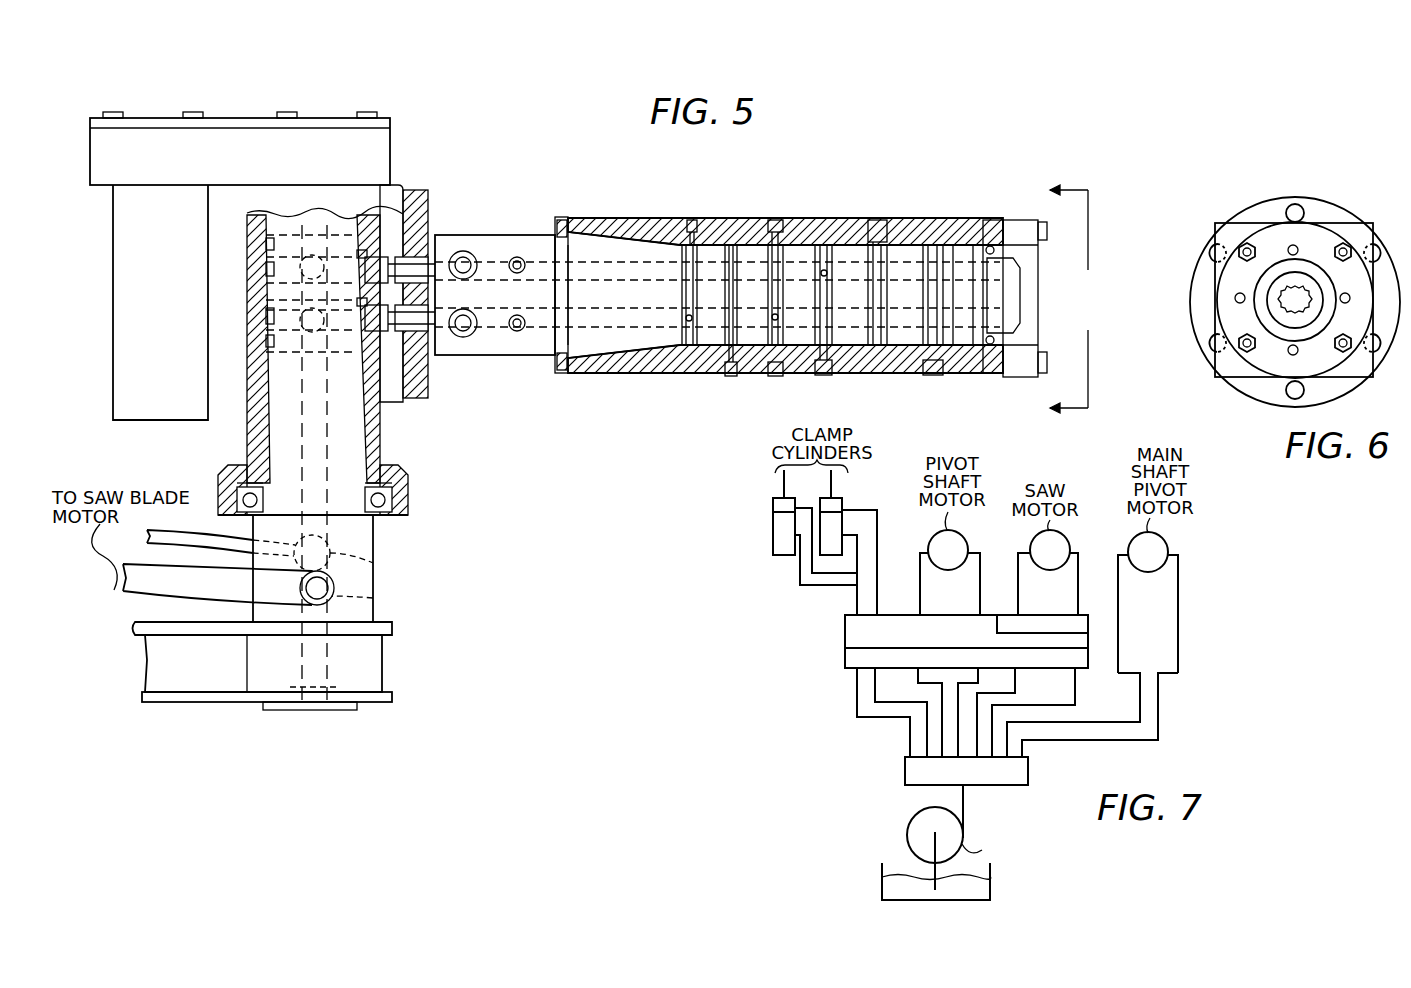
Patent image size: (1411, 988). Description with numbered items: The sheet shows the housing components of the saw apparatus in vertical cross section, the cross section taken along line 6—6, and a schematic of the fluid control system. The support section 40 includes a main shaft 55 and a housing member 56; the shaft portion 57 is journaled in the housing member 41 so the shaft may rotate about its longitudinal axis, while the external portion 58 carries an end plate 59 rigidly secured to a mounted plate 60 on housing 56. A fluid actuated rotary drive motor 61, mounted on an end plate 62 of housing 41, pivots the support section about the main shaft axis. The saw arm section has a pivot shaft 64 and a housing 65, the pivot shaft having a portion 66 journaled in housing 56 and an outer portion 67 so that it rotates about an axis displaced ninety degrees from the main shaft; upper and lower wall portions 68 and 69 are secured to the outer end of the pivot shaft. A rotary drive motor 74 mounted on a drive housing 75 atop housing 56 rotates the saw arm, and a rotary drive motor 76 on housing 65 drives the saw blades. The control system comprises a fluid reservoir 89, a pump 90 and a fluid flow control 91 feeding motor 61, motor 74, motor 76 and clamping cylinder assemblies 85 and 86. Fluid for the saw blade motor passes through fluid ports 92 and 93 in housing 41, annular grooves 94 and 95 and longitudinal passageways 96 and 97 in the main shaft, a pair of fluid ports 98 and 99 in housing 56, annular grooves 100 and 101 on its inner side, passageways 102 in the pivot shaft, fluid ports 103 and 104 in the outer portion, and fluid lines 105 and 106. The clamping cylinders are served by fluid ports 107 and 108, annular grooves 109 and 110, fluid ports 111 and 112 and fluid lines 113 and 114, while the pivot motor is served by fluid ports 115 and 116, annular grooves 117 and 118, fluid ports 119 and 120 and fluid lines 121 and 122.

In FIG. 5, the support section 40 is at (402, 134).
In FIG. 5, the housing member 41 is at (843, 220).
In FIG. 7, the housing member 41 is at (845, 666).
In FIG. 5, the main shaft 55 is at (527, 230).
In FIG. 7, the main shaft 55 is at (845, 648).
In FIG. 5, the housing member 56 is at (388, 447).
In FIG. 5, the shaft portion 57 is at (656, 360).
In FIG. 5, the external portion 58 is at (513, 356).
In FIG. 5, the end plate 59 is at (426, 208).
In FIG. 6, the end plate 59 is at (1203, 297).
In FIG. 5, the mounted plate 60 is at (393, 194).
In FIG. 7, the rotary drive motor 61 is at (1168, 554).
In FIG. 5, the end plate 62 is at (1018, 374).
In FIG. 6, the end plate 62 is at (1228, 365).
In FIG. 5, the pivot shaft 64 is at (378, 541).
In FIG. 7, the pivot shaft 64 is at (1083, 628).
In FIG. 5, the housing 65 is at (384, 668).
In FIG. 5, the shaft portion 66 is at (352, 428).
In FIG. 5, the outer portion 67 is at (338, 590).
In FIG. 5, the upper wall portion 68 is at (392, 634).
In FIG. 5, the lower wall portion 69 is at (373, 704).
In FIG. 5, the rotary drive motor 74 is at (114, 324).
In FIG. 7, the rotary drive motor 74 is at (968, 551).
In FIG. 5, the drive housing 75 is at (263, 117).
In FIG. 7, the rotary drive motor 76 is at (1069, 551).
In FIG. 7, the clamping cylinder assembly 85 is at (845, 500).
In FIG. 7, the clamping cylinder assembly 86 is at (773, 542).
In FIG. 7, the fluid reservoir 89 is at (882, 884).
In FIG. 7, the pump 90 is at (911, 830).
In FIG. 7, the fluid flow control 91 is at (905, 776).
In FIG. 5, the fluid port 92 is at (880, 222).
In FIG. 5, the fluid port 93 is at (934, 372).
In FIG. 5, the annular groove 94 is at (878, 346).
In FIG. 5, the annular groove 95 is at (940, 248).
In FIG. 5, the passageway 96 is at (606, 318).
In FIG. 5, the passageway 97 is at (621, 280).
In FIG. 5, the fluid port 98 is at (362, 360).
In FIG. 5, the bolt 99 is at (388, 265).
In FIG. 5, the annular groove 100 is at (268, 320).
In FIG. 5, the annular groove 101 is at (268, 264).
In FIG. 5, the passageway 102 is at (395, 459).
In FIG. 5, the fluid port 103 is at (336, 601).
In FIG. 5, the fluid port 104 is at (332, 556).
In FIG. 5, the fluid line 105 is at (199, 594).
In FIG. 7, the fluid line 105 is at (1018, 602).
In FIG. 5, the fluid line 106 is at (209, 558).
In FIG. 7, the fluid line 106 is at (1078, 605).
In FIG. 5, the fluid port 107 is at (775, 228).
In FIG. 5, the fluid port 108 is at (824, 376).
In FIG. 5, the annular groove 109 is at (772, 374).
In FIG. 5, the annular groove 110 is at (823, 248).
In FIG. 5, the fluid port 111 is at (464, 316).
In FIG. 5, the fluid port 112 is at (518, 258).
In FIG. 7, the fluid line 113 is at (857, 600).
In FIG. 7, the fluid line 114 is at (879, 562).
In FIG. 5, the fluid port 115 is at (728, 376).
In FIG. 5, the fluid port 116 is at (685, 230).
In FIG. 5, the annular groove 117 is at (731, 300).
In FIG. 5, the annular groove 118 is at (684, 292).
In FIG. 5, the fluid port 119 is at (518, 316).
In FIG. 5, the fluid port 120 is at (574, 252).
In FIG. 7, the fluid line 121 is at (920, 603).
In FIG. 7, the fluid line 122 is at (980, 603).
In FIG. 5, the section line 6- 6 is at (1057, 298).